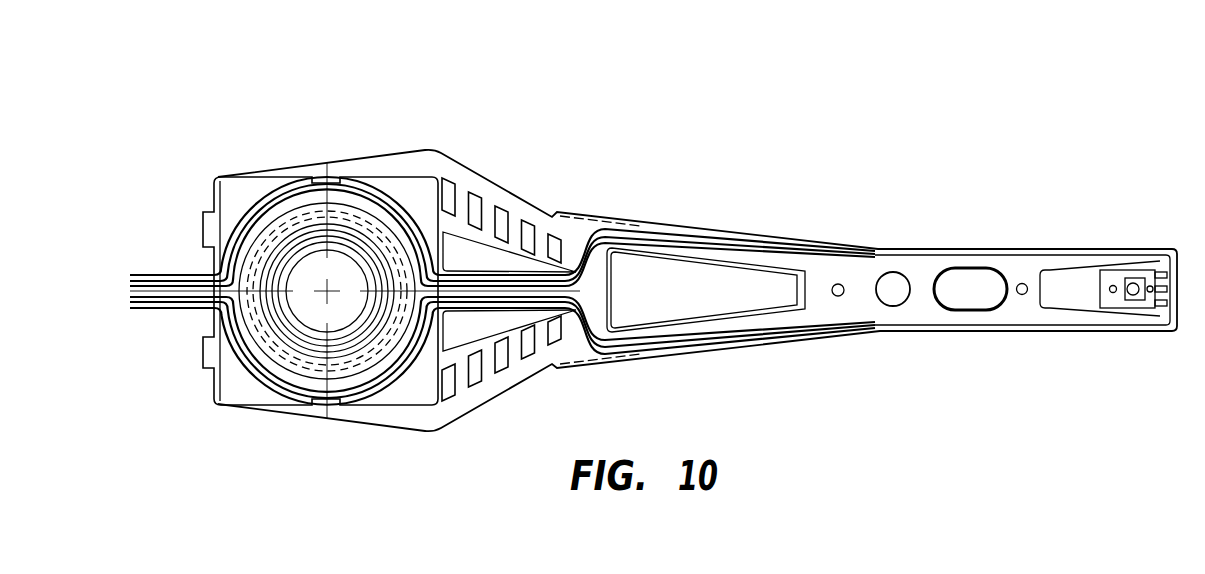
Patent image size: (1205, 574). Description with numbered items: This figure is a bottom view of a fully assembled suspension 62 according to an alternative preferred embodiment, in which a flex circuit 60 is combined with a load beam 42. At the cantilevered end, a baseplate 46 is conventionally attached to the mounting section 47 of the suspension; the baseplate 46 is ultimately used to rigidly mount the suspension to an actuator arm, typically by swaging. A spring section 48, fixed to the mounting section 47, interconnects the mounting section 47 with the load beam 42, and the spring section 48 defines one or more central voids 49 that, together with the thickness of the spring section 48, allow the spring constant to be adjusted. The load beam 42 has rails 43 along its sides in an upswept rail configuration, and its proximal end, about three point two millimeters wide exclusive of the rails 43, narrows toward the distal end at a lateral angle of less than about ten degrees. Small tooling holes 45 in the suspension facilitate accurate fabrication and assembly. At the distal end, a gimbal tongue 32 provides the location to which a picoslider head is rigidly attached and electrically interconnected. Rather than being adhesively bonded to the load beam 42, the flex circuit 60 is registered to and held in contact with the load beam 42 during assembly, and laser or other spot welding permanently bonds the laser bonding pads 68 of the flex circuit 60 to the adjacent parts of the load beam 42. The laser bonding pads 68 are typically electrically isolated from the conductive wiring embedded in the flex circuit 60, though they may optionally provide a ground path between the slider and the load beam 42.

The suspension 62 is at (641, 126).
The baseplate 46 is at (258, 178).
The mounting section 47 is at (366, 160).
The spring section 48 is at (512, 188).
The central voids 49 is at (503, 318).
The load beam 42 is at (585, 216).
The rails 43 is at (708, 226).
The flex circuit 60 is at (905, 238).
The laser bonding pads 68 is at (840, 297).
The tooling holes 45 is at (965, 300).
The gimbal tongue 32 is at (1100, 297).